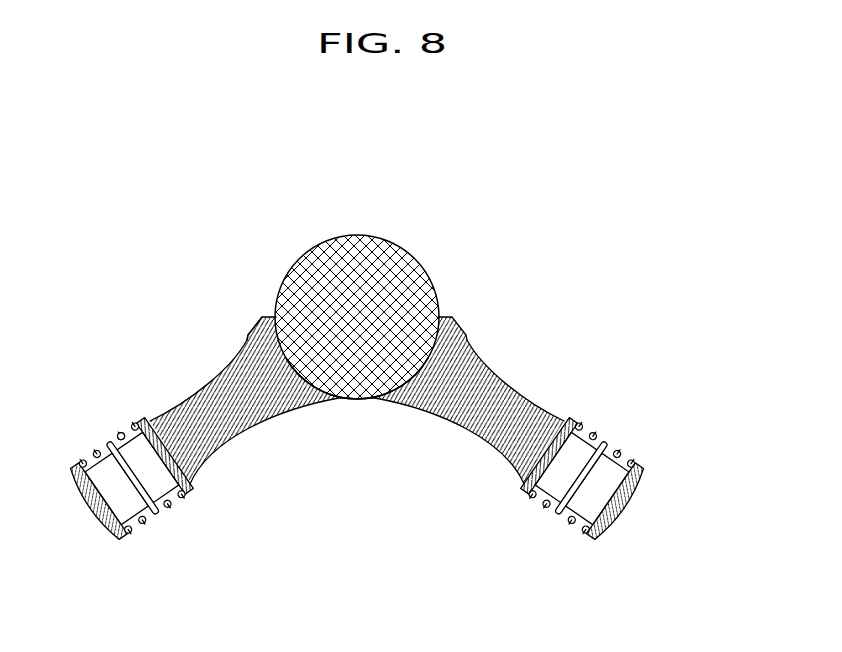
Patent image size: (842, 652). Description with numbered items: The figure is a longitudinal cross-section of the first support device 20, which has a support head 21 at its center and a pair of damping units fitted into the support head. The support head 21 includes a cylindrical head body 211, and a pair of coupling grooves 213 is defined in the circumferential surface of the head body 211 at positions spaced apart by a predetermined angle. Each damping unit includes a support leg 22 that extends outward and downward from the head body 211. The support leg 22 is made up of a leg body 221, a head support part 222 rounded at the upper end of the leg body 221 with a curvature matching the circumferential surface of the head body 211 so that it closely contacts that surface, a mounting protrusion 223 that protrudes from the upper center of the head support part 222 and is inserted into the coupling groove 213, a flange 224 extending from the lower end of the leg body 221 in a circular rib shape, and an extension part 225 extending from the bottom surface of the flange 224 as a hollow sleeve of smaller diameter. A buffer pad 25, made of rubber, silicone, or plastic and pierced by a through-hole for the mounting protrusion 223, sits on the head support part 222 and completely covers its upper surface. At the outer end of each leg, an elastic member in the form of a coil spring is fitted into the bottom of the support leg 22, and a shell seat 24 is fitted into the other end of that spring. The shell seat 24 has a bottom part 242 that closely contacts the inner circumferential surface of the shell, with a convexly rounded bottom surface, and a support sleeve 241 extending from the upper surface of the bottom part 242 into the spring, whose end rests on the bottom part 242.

The first support device 20 is at (462, 182).
The support head 21 is at (373, 172).
The head body 211 is at (355, 234).
The coupling groove 213 is at (276, 302).
The support leg 22 is at (560, 569).
The leg body 221 is at (433, 419).
The head support part 222 is at (384, 404).
The mounting protrusion 223 is at (350, 401).
The flange 224 is at (521, 480).
The extension part 225 is at (582, 478).
The shell seat 24 is at (716, 432).
The support sleeve 241 is at (594, 487).
The bottom part 242 is at (627, 481).
The buffer pad 25 is at (257, 342).